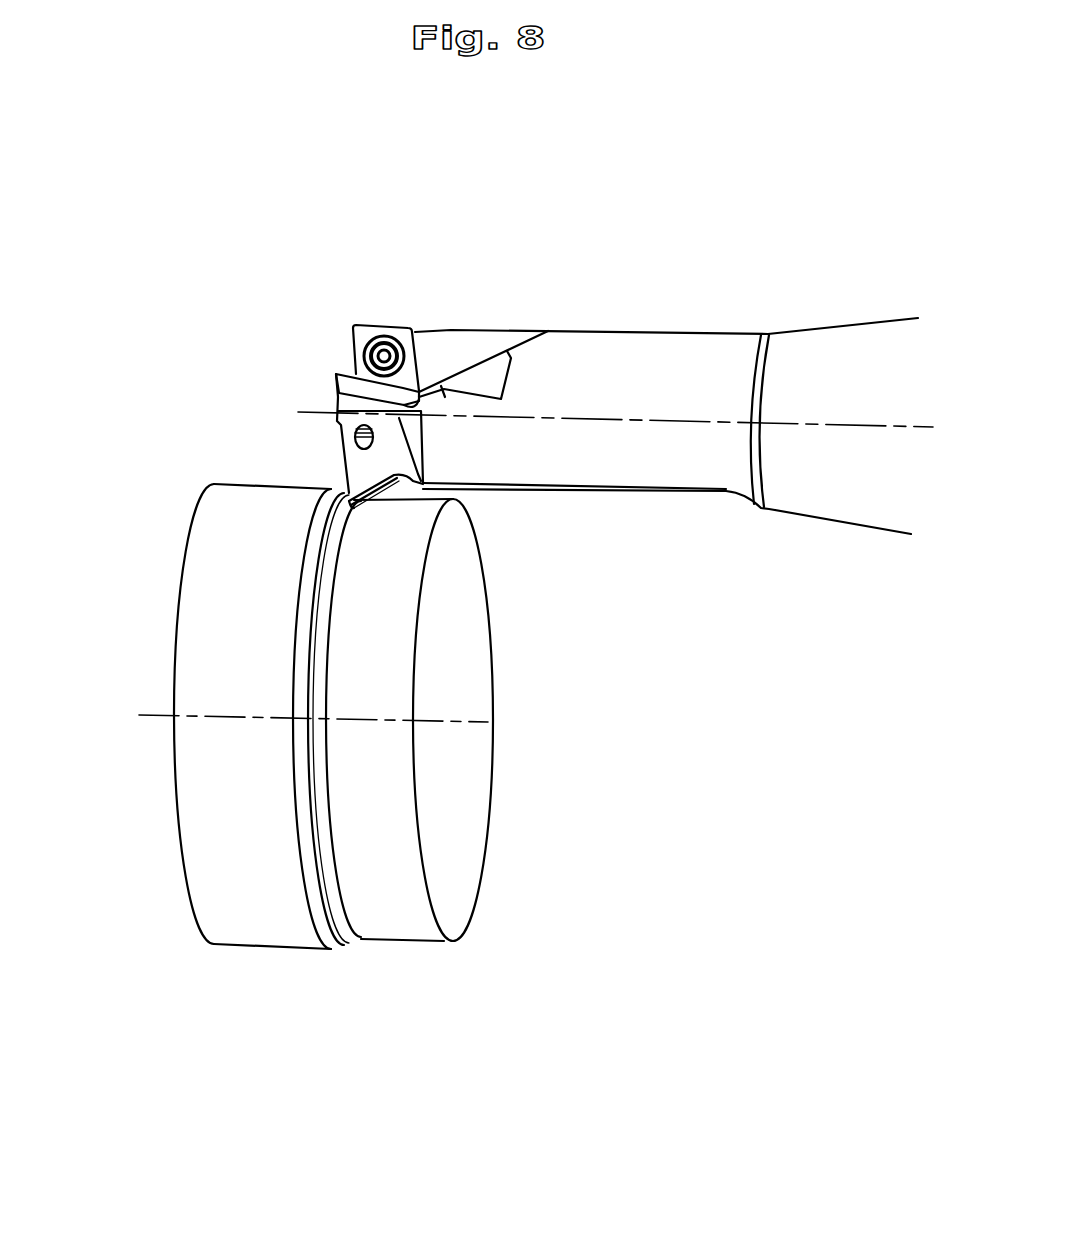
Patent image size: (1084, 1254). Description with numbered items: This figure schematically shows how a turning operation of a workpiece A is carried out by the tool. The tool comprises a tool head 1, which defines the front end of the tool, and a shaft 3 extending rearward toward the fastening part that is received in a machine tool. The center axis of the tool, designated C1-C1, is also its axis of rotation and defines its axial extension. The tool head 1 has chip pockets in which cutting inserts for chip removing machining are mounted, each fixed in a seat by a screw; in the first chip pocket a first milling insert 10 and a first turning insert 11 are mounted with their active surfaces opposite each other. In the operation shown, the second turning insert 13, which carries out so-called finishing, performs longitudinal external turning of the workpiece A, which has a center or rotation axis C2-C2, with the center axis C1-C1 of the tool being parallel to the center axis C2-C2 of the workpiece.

The tool head 1 is at (563, 425).
The shaft 3 is at (665, 496).
The first milling insert 10 is at (335, 385).
The first turning insert 11 is at (383, 322).
The second turning insert 13 is at (388, 492).
The workpiece A is at (303, 956).
The center axis of the tool C1-C1 is at (667, 418).
The center axis of the workpiece C2-C2 is at (157, 713).